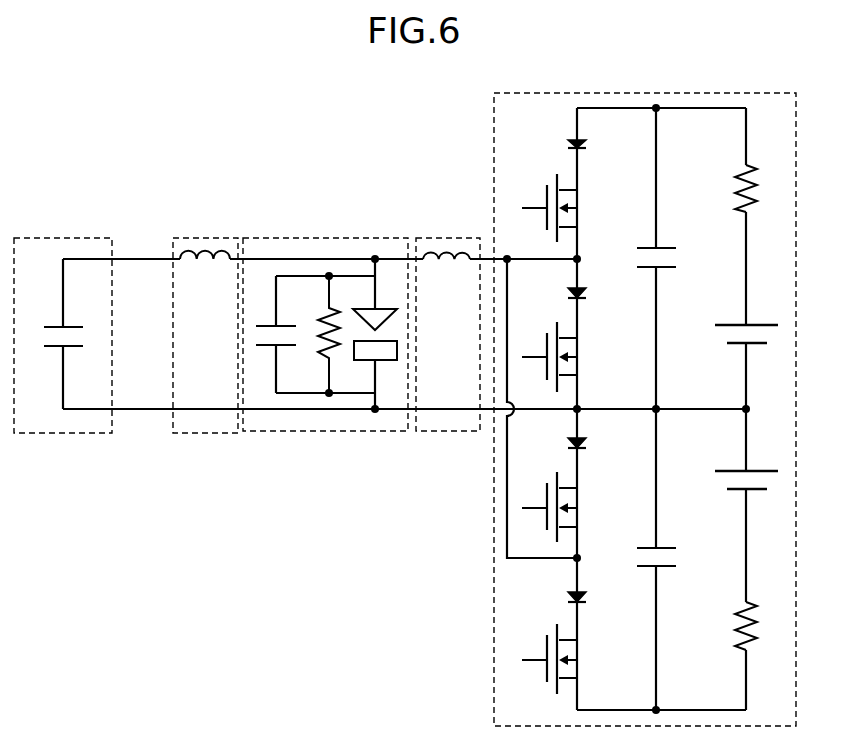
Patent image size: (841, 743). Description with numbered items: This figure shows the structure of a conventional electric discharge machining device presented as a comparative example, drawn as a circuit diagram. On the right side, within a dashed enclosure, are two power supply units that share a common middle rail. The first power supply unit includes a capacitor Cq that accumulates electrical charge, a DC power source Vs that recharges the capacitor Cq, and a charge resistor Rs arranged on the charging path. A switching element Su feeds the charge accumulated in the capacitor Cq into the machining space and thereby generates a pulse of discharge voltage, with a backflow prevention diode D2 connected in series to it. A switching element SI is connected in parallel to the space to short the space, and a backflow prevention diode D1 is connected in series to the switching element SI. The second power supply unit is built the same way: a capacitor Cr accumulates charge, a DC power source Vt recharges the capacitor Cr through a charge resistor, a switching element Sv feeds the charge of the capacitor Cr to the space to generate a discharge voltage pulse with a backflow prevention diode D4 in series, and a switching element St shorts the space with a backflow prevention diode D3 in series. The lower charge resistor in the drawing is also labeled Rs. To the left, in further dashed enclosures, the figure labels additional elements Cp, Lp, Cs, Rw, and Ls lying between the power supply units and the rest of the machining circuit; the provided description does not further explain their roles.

The primary capacitor Cp is at (70, 347).
The primary inductor Lp is at (208, 265).
The secondary capacitor Cs is at (284, 346).
The winding resistance Rw is at (324, 312).
The secondary inductor Ls is at (452, 265).
The switching element Su is at (545, 194).
The backflow prevention diode D2 is at (588, 150).
The switching element SI is at (545, 342).
The backflow prevention diode D1 is at (588, 300).
The switching element Sv is at (545, 492).
The backflow prevention diode D4 is at (588, 450).
The switching element St is at (545, 644).
The backflow prevention diode D3 is at (588, 604).
The capacitor Cq is at (668, 268).
The capacitor Cr is at (668, 567).
The charge resistor Rs is at (742, 170).
The DC power source Vs is at (760, 345).
The DC power source Vt is at (760, 491).